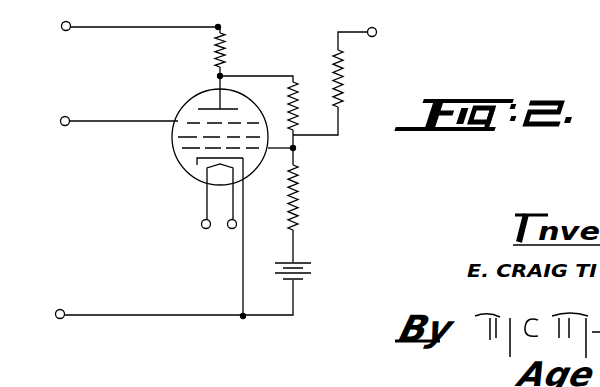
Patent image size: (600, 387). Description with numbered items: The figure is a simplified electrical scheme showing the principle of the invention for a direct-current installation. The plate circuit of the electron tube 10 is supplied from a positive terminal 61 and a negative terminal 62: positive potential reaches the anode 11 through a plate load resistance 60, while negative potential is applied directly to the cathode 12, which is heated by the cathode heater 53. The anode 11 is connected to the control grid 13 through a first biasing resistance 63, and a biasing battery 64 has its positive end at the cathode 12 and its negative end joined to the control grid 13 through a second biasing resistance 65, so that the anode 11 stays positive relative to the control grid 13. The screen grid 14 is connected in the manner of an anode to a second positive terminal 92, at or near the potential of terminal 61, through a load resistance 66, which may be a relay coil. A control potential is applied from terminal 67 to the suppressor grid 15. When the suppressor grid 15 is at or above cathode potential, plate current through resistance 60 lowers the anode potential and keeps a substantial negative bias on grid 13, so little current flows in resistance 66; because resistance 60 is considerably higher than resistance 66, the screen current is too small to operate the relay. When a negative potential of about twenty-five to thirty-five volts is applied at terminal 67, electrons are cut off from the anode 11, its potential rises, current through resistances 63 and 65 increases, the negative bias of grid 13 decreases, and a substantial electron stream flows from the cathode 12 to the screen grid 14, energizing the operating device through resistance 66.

The electron tube 10 is at (188, 100).
The anode 11 is at (208, 108).
The cathode 12 is at (198, 164).
The control grid 13 is at (183, 148).
The screen grid 14 is at (180, 137).
The suppressor grid 15 is at (187, 123).
The cathode heater 53 is at (215, 178).
The plate load resistance 60 is at (214, 46).
The positive terminal 61 is at (62, 30).
The negative terminal 62 is at (57, 310).
The first biasing resistance 63 is at (300, 92).
The biasing battery 64 is at (316, 274).
The second biasing resistance 65 is at (299, 195).
The load resistance 66 is at (344, 78).
The terminal 67 is at (65, 116).
The second positive terminal 92 is at (376, 29).